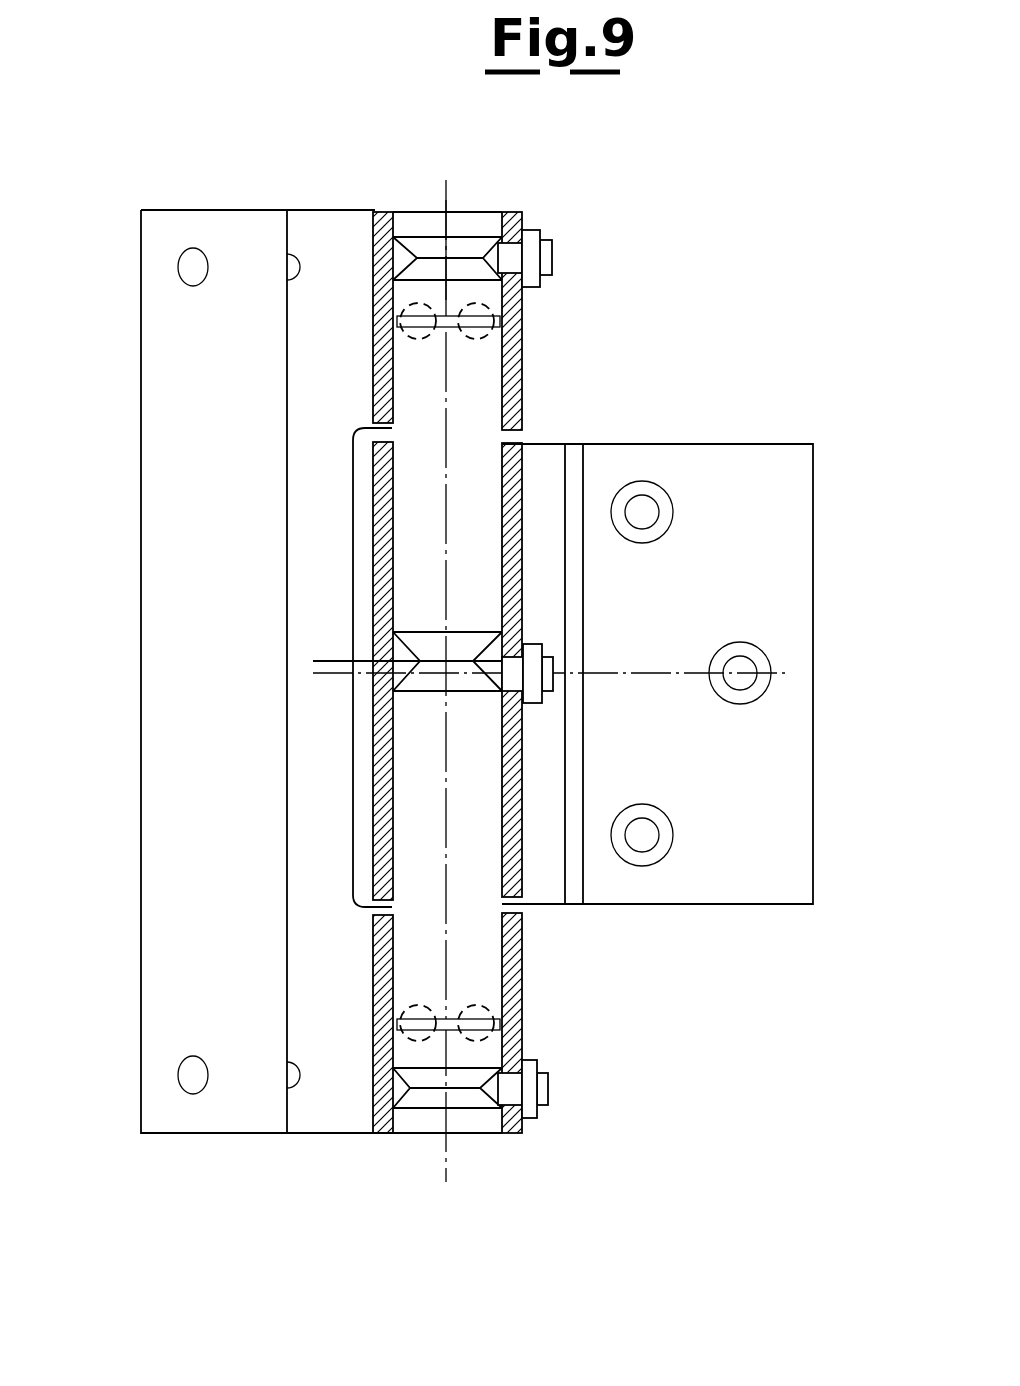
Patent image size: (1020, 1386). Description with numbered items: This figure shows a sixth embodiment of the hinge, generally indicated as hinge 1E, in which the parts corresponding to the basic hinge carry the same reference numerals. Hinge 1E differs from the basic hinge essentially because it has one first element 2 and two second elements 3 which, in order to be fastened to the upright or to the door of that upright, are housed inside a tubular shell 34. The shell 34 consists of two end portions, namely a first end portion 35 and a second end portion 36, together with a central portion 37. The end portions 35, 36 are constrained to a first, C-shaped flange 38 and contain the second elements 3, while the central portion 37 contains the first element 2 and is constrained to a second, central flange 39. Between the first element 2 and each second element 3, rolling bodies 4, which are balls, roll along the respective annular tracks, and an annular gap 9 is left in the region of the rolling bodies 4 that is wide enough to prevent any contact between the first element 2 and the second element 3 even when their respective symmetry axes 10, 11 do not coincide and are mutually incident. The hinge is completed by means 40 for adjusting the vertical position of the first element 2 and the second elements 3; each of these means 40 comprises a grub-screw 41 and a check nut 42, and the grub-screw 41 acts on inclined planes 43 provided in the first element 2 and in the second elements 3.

The hinge 1E is at (101, 133).
The first element 2 is at (475, 670).
The second element 3 is at (407, 288).
The rolling bodies 4 is at (470, 340).
The annular gap 9 is at (502, 322).
The symmetry axis 10 is at (447, 418).
The symmetry axis 11 is at (450, 240).
The tubular shell 34 is at (554, 292).
The first end portion 35 is at (383, 258).
The second end portion 36 is at (382, 1092).
The central portion 37 is at (523, 868).
The C-shaped flange 38 is at (210, 606).
The central flange 39 is at (768, 596).
The adjustment means 40 is at (469, 658).
The grub-screw 41 is at (513, 258).
The check nut 42 is at (530, 237).
The inclined planes 43 is at (437, 275).